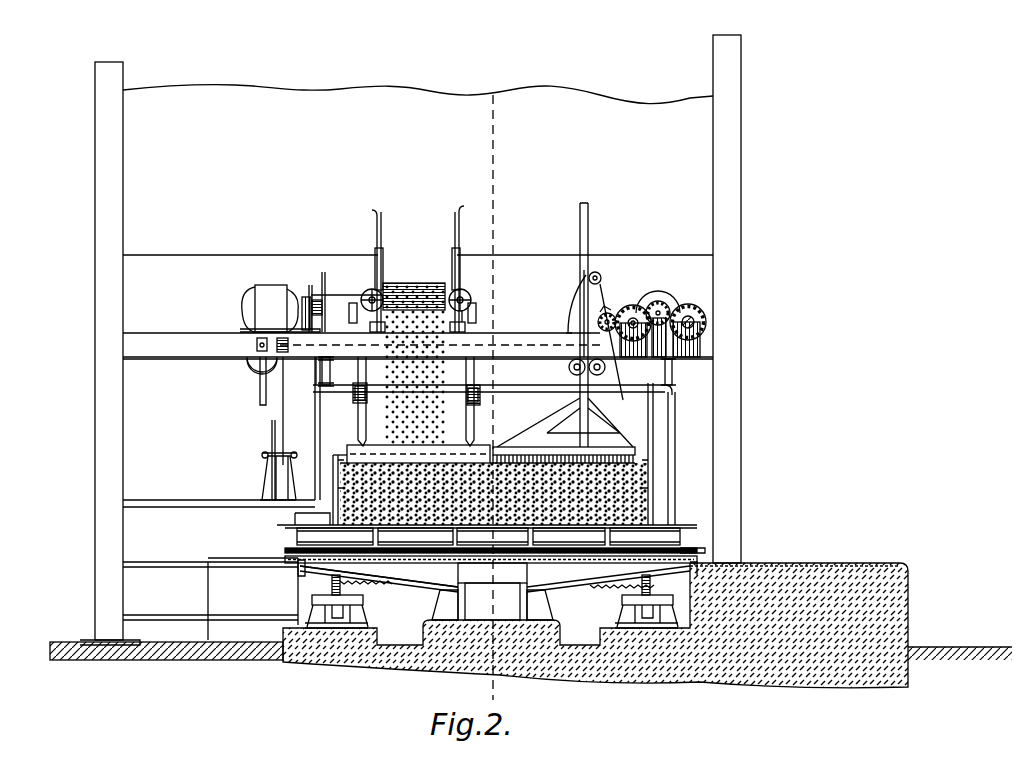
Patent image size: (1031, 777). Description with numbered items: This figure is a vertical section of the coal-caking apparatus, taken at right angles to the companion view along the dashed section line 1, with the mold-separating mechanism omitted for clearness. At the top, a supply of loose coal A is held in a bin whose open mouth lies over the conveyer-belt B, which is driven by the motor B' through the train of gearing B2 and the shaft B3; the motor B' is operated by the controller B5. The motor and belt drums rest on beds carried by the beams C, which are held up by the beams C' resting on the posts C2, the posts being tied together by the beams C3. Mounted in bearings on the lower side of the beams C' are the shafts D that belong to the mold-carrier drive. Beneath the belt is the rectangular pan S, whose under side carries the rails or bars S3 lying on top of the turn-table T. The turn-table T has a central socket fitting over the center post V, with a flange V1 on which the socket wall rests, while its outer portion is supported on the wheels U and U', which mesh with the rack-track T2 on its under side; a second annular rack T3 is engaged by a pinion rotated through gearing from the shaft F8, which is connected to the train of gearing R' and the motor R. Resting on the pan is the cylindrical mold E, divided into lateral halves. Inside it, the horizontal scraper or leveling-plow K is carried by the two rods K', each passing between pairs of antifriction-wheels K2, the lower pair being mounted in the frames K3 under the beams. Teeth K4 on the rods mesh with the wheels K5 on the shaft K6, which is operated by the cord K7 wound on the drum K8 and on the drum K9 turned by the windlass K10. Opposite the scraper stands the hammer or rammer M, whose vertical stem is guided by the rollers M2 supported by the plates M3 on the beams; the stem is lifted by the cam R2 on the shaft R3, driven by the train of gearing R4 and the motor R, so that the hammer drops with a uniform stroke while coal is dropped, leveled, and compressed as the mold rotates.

The supply of loose coal A is at (410, 340).
The section line 1 is at (491, 390).
The conveyer-belt B is at (421, 269).
The motor B' is at (280, 296).
The train of gearing B2 is at (324, 295).
The shaft B3 is at (343, 297).
The controller B5 is at (258, 374).
The beams C is at (418, 336).
The beams C' is at (482, 371).
The posts C2 is at (314, 418).
The beams C3 is at (517, 386).
The shafts D is at (640, 485).
The cylindrical matrix or mold E is at (494, 494).
The shaft F8 is at (700, 315).
The horizontal scraper or leveling-plow K is at (441, 438).
The rods K' is at (403, 401).
The antifriction-wheels K2 is at (358, 325).
The frames K3 is at (352, 400).
The teeth K4 is at (480, 282).
The wheels K5 is at (478, 328).
The shaft K6 is at (267, 393).
The cord K7 is at (283, 408).
The drum K8 is at (278, 341).
The drum K9 is at (264, 468).
The windlass K10 is at (272, 440).
The hammer or rammer M is at (564, 430).
The rollers M2 is at (600, 238).
The plates M3 is at (570, 318).
The motor R is at (658, 313).
The train of gearing R' is at (688, 315).
The cam R2 is at (604, 278).
The shaft R3 is at (615, 351).
The train of gearing R4 is at (633, 304).
The rectangular pan S is at (487, 538).
The rails or bars S3 is at (690, 553).
The turn-table T is at (412, 576).
The rack-track T2 is at (610, 586).
The second annular rack T3 is at (305, 583).
The wheels U is at (346, 601).
The roller support U' is at (635, 601).
The center post V is at (492, 601).
The wedge V1 is at (442, 598).